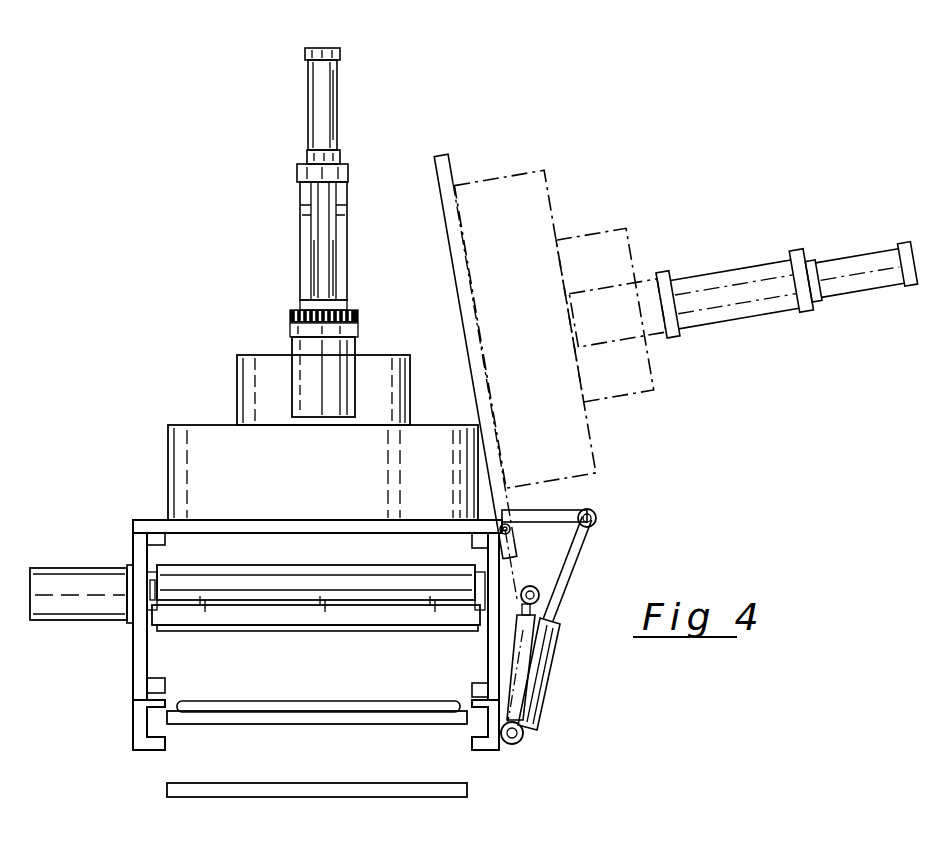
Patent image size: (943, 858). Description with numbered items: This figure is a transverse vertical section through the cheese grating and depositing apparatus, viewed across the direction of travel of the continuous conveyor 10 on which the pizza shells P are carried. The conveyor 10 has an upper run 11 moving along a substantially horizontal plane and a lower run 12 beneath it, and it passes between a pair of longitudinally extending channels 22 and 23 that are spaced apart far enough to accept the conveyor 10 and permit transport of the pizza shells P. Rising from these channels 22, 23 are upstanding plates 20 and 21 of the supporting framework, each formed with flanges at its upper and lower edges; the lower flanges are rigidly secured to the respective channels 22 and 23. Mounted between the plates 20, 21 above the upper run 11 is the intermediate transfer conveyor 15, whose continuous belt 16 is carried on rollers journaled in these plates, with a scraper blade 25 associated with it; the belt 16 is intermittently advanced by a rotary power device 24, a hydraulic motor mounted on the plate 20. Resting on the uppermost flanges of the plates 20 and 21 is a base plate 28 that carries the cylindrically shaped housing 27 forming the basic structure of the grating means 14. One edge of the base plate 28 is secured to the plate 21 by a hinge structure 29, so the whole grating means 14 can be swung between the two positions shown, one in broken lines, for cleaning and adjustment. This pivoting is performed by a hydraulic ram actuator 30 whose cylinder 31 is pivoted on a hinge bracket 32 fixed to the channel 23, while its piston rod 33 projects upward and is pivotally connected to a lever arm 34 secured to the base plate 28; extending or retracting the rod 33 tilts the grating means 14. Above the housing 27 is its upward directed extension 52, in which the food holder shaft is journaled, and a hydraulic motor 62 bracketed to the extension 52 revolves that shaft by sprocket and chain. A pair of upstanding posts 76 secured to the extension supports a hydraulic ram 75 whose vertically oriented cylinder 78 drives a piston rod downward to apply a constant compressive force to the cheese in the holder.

The continuous conveyor 10 is at (190, 800).
The upper run 11 is at (302, 722).
The lower run 12 is at (351, 793).
The grating means 14 is at (166, 424).
The intermediate transfer conveyor 15 is at (184, 555).
The continuous belt 16 is at (343, 568).
The upstanding plate 20 is at (139, 665).
The upstanding plate 21 is at (487, 651).
The longitudinally extending channel 22 is at (138, 715).
The longitudinally extending channel 23 is at (478, 746).
The rotary power device 24 is at (80, 605).
The scraper blade 25 is at (275, 602).
The cylindrically shaped housing 27 is at (164, 467).
The base plate 28 is at (150, 527).
The hinge structure 29 is at (509, 527).
The hydraulic ram actuator 30 is at (548, 685).
The cylinder 31 is at (556, 646).
The hinge bracket 32 is at (516, 743).
The piston rod 33 is at (572, 572).
The lever arm 34 is at (590, 510).
The upward directed extension 52 is at (246, 375).
The hydraulic motor 62 is at (349, 357).
The hydraulic ram 75 is at (307, 104).
The upstanding posts 76 is at (321, 253).
The cylinder 78 is at (338, 95).
The pizza shells P is at (290, 705).